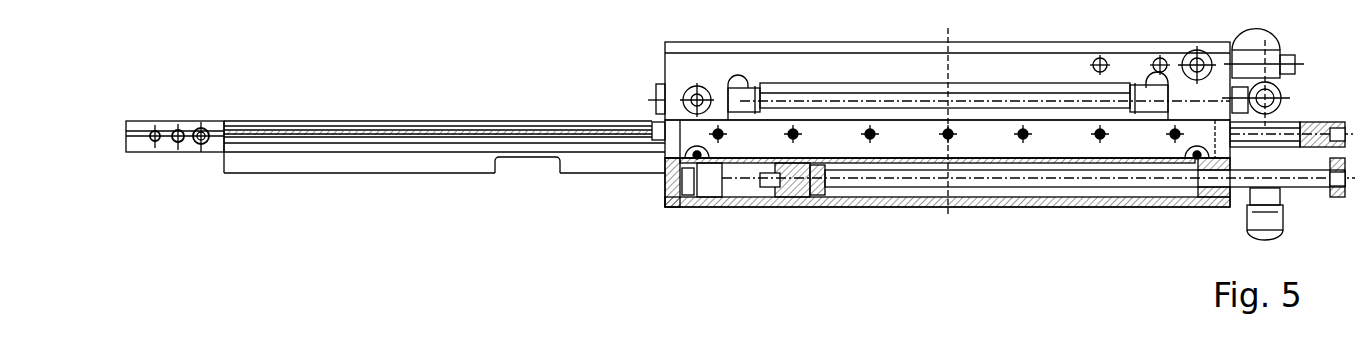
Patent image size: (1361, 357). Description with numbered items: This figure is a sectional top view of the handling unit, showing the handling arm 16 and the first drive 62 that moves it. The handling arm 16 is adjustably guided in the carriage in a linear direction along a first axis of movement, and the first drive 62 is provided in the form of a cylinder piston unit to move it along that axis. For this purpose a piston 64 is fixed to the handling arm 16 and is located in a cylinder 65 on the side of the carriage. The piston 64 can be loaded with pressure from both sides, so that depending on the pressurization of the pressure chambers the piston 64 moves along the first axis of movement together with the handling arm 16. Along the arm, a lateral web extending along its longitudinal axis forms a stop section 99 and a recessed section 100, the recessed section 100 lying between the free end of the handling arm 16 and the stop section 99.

The handling arm 16 is at (437, 133).
The stop section 99 is at (607, 160).
The recessed section 100 is at (524, 160).
The first drive 62 is at (792, 208).
The piston 64 is at (820, 198).
The cylinder 65 is at (848, 192).